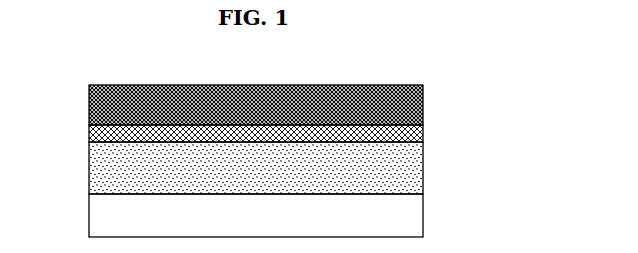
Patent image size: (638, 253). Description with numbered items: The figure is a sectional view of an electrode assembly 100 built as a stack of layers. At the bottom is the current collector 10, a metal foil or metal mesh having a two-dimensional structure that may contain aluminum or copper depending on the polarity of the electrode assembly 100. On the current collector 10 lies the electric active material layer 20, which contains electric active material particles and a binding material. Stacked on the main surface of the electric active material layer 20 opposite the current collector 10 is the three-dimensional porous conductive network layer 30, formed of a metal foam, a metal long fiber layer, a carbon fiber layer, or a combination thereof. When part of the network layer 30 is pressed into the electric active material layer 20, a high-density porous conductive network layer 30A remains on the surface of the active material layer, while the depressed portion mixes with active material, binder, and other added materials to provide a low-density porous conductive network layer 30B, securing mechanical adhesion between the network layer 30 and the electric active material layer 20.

The electrode assembly 100 is at (315, 134).
The current collector 10 is at (423, 210).
The electric active material layer 20 is at (423, 165).
The 3D porous conductive network layer 30 is at (315, 116).
The high-density porous conductive network layer 30A is at (423, 103).
The low-density porous conductive network layer 30B is at (423, 133).